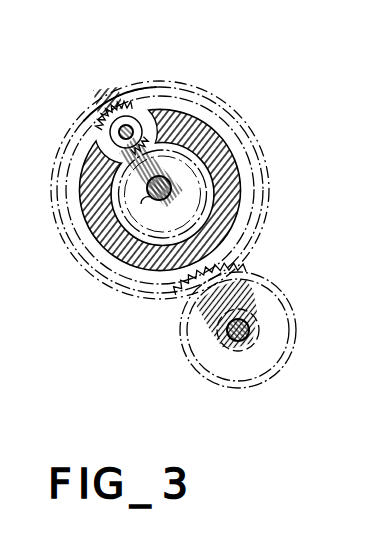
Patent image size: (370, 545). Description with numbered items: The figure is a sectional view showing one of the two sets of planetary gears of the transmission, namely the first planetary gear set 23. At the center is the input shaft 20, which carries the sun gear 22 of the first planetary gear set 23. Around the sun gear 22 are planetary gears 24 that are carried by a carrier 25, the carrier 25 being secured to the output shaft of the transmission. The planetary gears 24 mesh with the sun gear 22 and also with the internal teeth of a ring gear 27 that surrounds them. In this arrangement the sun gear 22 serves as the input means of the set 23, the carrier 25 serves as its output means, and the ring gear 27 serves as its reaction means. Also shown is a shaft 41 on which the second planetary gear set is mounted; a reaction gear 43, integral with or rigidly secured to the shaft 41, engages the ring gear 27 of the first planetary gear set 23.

The input shaft 20 is at (157, 200).
The sun gear 22 is at (160, 164).
The first planetary gear set 23 is at (150, 66).
The planetary gears 24 is at (110, 128).
The carrier 25 is at (236, 173).
The ring gear 27 is at (103, 112).
The shaft 41 is at (238, 349).
The reaction gear 43 is at (277, 300).